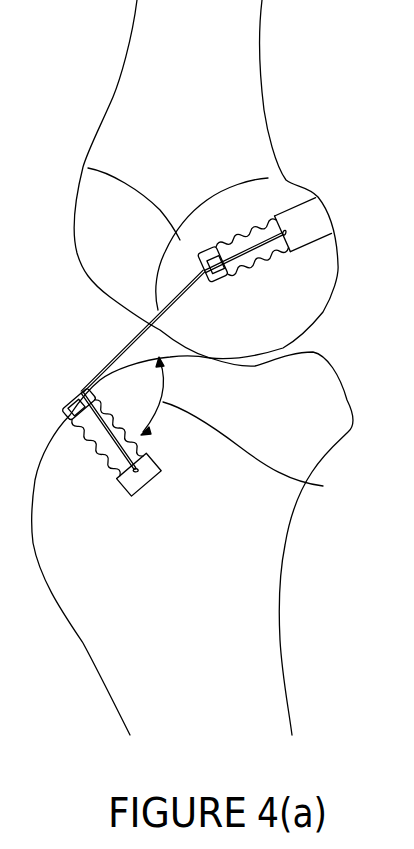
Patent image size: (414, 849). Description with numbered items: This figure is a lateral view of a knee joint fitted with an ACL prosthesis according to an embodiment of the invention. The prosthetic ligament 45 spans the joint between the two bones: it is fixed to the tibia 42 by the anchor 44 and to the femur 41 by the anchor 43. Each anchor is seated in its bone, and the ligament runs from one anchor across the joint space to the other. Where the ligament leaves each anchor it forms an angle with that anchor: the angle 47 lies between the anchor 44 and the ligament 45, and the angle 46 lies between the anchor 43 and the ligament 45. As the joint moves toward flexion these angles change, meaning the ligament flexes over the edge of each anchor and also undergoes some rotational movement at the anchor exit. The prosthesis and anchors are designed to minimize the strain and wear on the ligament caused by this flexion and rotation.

The femur 41 is at (167, 32).
The tibia 42 is at (237, 640).
The anchor 43 is at (290, 229).
The anchor 44 is at (82, 440).
The prosthetic ligament 45 is at (293, 348).
The angle 46 is at (88, 168).
The angle 47 is at (323, 486).